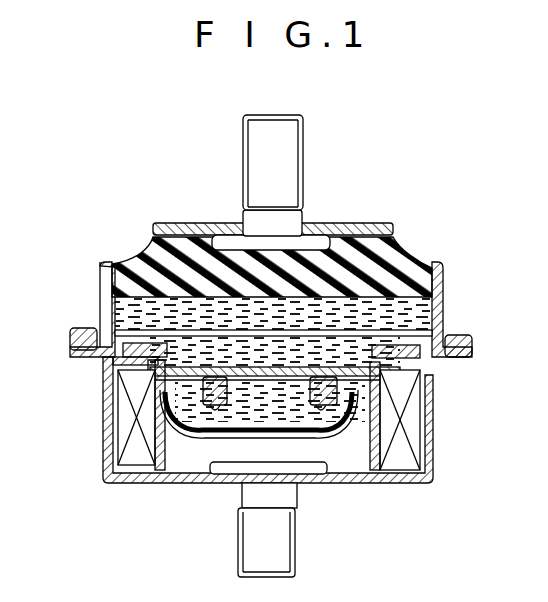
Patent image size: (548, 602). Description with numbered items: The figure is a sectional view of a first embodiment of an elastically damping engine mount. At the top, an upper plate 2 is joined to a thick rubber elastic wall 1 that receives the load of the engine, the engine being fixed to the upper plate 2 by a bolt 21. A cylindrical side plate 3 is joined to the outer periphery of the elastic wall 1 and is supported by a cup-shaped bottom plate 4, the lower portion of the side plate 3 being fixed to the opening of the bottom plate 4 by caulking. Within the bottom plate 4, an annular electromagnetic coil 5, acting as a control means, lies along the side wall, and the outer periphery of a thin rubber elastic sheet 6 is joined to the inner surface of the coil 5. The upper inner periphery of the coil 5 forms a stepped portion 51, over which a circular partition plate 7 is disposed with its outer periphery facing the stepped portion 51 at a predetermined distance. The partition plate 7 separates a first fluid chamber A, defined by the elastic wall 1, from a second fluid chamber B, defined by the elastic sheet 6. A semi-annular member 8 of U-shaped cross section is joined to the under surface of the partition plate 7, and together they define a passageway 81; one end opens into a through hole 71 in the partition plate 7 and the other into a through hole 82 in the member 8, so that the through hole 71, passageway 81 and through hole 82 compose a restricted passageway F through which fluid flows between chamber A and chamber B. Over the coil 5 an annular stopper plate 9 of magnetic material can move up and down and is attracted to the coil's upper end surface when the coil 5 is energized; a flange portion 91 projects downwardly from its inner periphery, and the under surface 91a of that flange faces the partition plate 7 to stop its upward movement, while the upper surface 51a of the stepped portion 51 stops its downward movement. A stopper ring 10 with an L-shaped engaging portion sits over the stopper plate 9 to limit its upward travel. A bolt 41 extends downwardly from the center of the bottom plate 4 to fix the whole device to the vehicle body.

The rubber elastic wall 1 is at (137, 270).
The upper plate 2 is at (215, 232).
The bolt 21 is at (258, 147).
The side plate 3 is at (100, 307).
The first fluid chamber A is at (140, 314).
The stopper plate 9 is at (153, 353).
The flange portion 91 is at (160, 367).
The stopper ring 10 is at (253, 331).
The under surface of the flange portion 91a is at (160, 373).
The partition plate 7 is at (222, 377).
The through hole 71 is at (268, 366).
The semi-annular member 8 is at (312, 478).
The passageway 81 is at (226, 465).
The through hole 82 is at (320, 480).
The second fluid chamber B is at (245, 510).
The rubber elastic sheet 6 is at (200, 478).
The restricted passageway F is at (180, 454).
The bottom plate 4 is at (103, 455).
The electromagnetic coil 5 is at (135, 460).
The stepped portion 51 is at (157, 373).
The upper surface of the stepped portion 51a is at (148, 383).
The bolt 41 is at (290, 553).